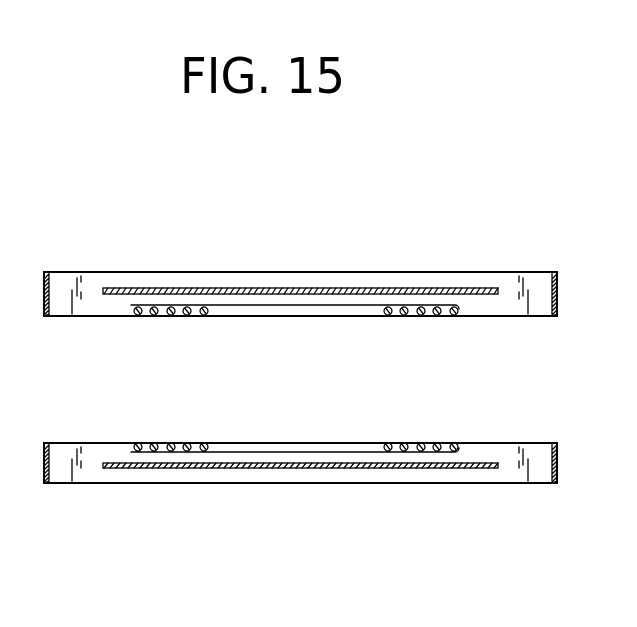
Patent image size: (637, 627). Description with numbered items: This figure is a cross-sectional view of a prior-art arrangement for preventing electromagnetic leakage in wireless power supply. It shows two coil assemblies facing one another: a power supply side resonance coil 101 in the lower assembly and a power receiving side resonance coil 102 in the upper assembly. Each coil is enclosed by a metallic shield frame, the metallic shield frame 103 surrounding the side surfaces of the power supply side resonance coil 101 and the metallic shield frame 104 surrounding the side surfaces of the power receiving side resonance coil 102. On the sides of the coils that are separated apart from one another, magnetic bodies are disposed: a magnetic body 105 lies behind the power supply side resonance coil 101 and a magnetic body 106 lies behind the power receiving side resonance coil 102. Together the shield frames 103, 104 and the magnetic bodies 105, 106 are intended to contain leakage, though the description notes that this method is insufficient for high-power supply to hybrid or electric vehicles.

The power supply side resonance coil 101 is at (316, 447).
The power receiving side resonance coil 102 is at (305, 312).
The metallic shield frame 103 is at (536, 443).
The metallic shield frame 104 is at (536, 272).
The magnetic body 105 is at (237, 468).
The magnetic body 106 is at (213, 290).